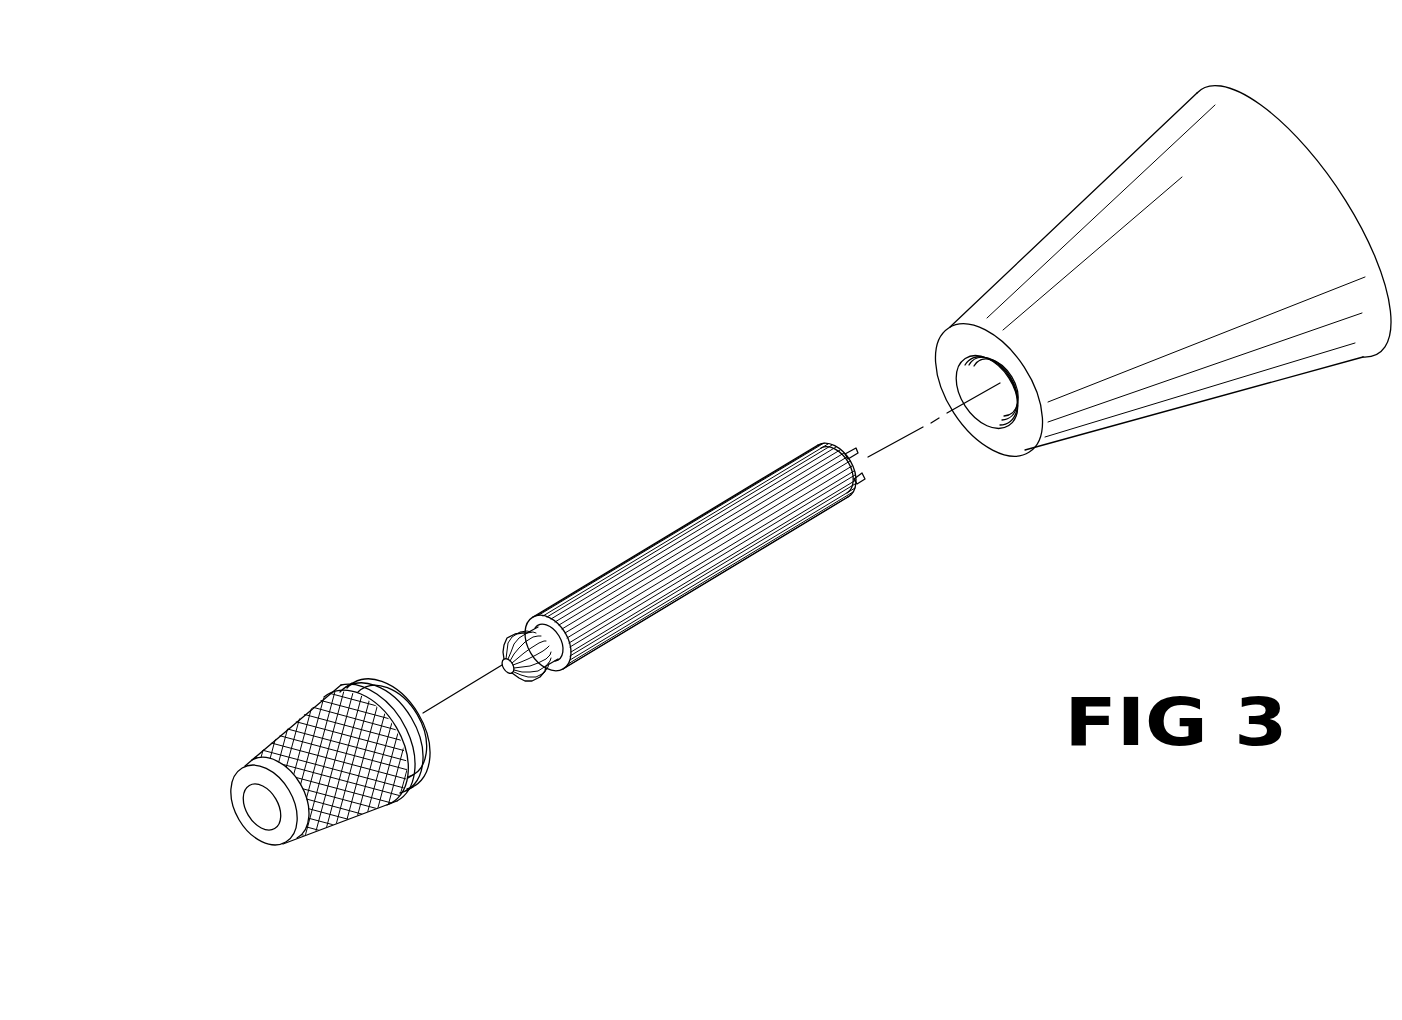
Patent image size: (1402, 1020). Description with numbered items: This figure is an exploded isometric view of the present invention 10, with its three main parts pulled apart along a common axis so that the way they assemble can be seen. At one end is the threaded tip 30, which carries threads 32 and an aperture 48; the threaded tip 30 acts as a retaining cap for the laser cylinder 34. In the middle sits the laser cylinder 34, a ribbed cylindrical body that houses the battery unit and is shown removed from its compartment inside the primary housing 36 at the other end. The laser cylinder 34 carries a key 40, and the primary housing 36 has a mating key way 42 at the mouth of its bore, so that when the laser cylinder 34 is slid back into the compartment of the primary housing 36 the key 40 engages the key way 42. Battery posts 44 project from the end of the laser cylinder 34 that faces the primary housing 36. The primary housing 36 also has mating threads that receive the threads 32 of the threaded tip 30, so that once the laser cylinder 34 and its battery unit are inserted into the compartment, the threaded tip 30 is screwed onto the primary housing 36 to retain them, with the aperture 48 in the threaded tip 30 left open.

The present invention 10 is at (975, 195).
The threaded tip 30 is at (408, 783).
The threads 32 is at (382, 684).
The laser cylinder 34 is at (587, 637).
The primary housing 36 is at (1207, 368).
The key 40 is at (813, 520).
The key way 42 is at (1015, 408).
The battery posts 44 is at (843, 452).
The aperture 48 is at (262, 807).